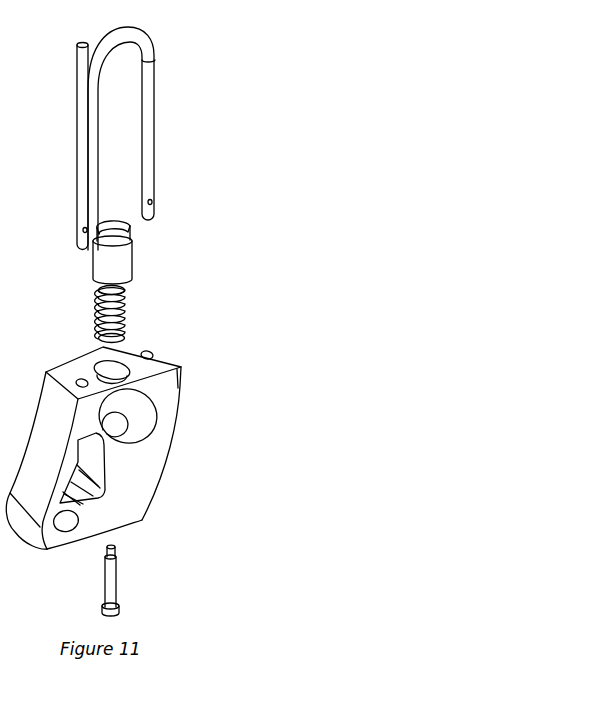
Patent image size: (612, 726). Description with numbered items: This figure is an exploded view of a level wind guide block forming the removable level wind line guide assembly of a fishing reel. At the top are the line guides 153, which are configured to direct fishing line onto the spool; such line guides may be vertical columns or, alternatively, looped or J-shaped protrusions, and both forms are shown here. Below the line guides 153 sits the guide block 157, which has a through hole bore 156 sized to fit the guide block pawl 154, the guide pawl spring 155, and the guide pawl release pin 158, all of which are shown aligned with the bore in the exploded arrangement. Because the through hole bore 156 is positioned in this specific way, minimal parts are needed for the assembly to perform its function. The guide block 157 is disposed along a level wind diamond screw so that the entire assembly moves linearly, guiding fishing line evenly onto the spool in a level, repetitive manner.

The line guides 153 is at (89, 112).
The guide block pawl 154 is at (130, 243).
The guide pawl spring 155 is at (126, 303).
The through hole bore 156 is at (115, 363).
The guide block 157 is at (180, 402).
The guide pawl release pin 158 is at (120, 565).